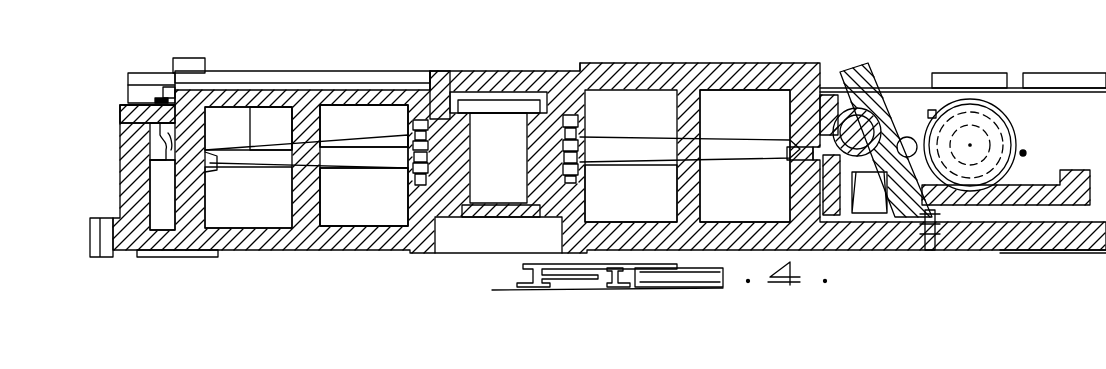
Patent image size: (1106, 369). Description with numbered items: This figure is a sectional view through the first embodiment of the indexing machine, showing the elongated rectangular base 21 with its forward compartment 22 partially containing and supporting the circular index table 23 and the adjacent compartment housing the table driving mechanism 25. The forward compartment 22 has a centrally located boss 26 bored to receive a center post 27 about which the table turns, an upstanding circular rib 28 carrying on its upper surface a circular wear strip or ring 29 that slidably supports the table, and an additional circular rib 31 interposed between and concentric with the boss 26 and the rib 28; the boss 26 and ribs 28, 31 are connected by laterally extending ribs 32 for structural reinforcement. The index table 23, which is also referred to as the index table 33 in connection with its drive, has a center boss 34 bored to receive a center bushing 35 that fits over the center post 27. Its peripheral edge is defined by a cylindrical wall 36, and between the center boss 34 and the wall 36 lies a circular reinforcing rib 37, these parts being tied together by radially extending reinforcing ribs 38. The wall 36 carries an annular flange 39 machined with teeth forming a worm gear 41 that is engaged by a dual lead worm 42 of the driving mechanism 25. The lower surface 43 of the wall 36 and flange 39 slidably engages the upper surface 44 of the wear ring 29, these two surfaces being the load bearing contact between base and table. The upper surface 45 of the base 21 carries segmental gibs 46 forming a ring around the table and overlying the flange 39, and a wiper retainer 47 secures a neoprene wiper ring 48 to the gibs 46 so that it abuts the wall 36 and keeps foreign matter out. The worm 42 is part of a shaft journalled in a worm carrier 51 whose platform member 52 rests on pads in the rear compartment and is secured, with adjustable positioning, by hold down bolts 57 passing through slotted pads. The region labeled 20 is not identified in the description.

The housing portion 20 is at (447, 96).
The base 21 is at (290, 253).
The forward compartment 22 is at (375, 220).
The index table 23 is at (621, 64).
The driving mechanism 25 is at (1020, 105).
The boss 26 is at (596, 195).
The center post 27 is at (553, 210).
The circular rib 28 is at (208, 204).
The wear strip or ring 29 is at (222, 178).
The circular rib 31 is at (322, 180).
The laterally extending ribs 32 is at (288, 200).
The index table 33 is at (720, 63).
The center boss 34 is at (408, 113).
The center bushing 35 is at (323, 129).
The cylindrical wall 36 is at (206, 124).
The circular reinforcing rib 37 is at (420, 152).
The radially extending reinforcing ribs 38 is at (284, 133).
The annular flange 39 is at (160, 158).
The worm gear 41 is at (160, 143).
The dual lead worm 42 is at (857, 132).
The lower surface 43 is at (158, 172).
The upper surface 44 is at (222, 160).
The upper surface 45 is at (128, 120).
The segmental gibs 46 is at (122, 110).
The wiper retainer 47 is at (158, 101).
The wiper ring 48 is at (164, 97).
The worm carrier 51 is at (901, 93).
The platform member 52 is at (1068, 215).
The hold down bolts 57 is at (930, 250).